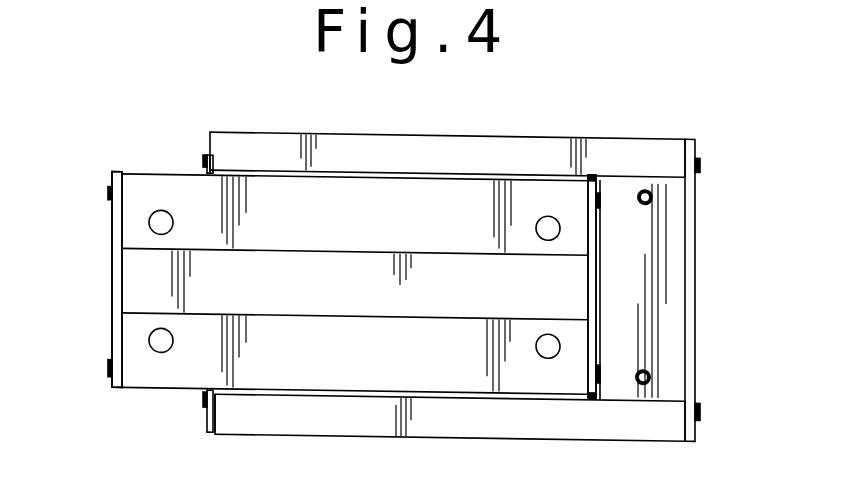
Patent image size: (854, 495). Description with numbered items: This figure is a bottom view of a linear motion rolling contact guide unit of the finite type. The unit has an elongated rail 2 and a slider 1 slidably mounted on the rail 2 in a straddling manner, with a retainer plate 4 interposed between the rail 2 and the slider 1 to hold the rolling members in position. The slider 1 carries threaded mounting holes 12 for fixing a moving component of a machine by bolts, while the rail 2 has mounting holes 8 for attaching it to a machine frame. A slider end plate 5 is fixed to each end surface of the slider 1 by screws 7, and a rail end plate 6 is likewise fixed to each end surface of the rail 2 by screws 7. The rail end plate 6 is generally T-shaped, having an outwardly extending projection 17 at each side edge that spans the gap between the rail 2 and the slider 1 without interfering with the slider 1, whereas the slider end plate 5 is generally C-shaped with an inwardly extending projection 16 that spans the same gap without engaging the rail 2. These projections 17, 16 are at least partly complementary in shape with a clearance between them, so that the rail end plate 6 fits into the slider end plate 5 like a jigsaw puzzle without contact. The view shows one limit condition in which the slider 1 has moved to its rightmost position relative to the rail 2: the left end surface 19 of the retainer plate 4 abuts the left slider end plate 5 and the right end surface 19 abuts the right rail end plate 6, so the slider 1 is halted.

The slider 1 is at (645, 152).
The rail 2 is at (131, 283).
The retainer plate 4 is at (466, 175).
The slider end plate 5 is at (209, 152).
The rail end plate 6 is at (112, 236).
The screws 7 is at (108, 373).
The mounting holes 8 is at (160, 357).
The mounting holes 12 is at (653, 374).
The inwardly extending projection 16 is at (215, 175).
The outwardly extending projection 17 is at (112, 177).
The end surface 19 is at (207, 173).